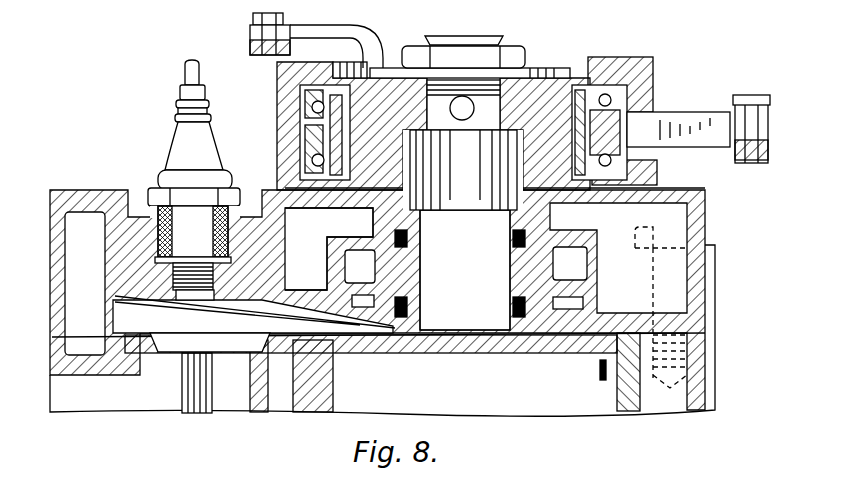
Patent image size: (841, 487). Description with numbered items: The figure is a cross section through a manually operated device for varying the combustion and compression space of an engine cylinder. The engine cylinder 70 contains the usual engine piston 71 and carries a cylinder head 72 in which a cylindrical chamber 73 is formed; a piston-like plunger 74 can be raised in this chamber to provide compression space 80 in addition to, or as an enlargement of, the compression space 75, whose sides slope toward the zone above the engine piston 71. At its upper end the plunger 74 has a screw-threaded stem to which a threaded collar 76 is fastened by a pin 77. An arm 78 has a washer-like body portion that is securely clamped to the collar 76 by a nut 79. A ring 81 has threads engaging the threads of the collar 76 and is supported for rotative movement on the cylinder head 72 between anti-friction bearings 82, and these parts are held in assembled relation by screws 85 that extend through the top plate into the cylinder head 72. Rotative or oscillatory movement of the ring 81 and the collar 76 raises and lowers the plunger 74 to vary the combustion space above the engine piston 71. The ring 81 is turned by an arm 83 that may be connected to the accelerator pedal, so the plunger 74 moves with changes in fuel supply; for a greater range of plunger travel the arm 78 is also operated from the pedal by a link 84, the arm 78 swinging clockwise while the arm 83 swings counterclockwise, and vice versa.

The engine cylinder 70 is at (294, 415).
The engine piston 71 is at (388, 355).
The cylinder head 72 is at (52, 260).
The cylindrical chamber 73 is at (370, 213).
The plunger 74 is at (489, 315).
The compression space 75 is at (268, 306).
The threaded collar 76 is at (564, 78).
The pin 77 is at (465, 120).
The arm 78 is at (376, 32).
The nut 79 is at (512, 58).
The compression space 80 is at (596, 236).
The ring 81 is at (640, 128).
The anti-friction bearings 82 is at (606, 94).
The arm 83 is at (182, 155).
The link 84 is at (250, 45).
The screws 85 is at (297, 60).